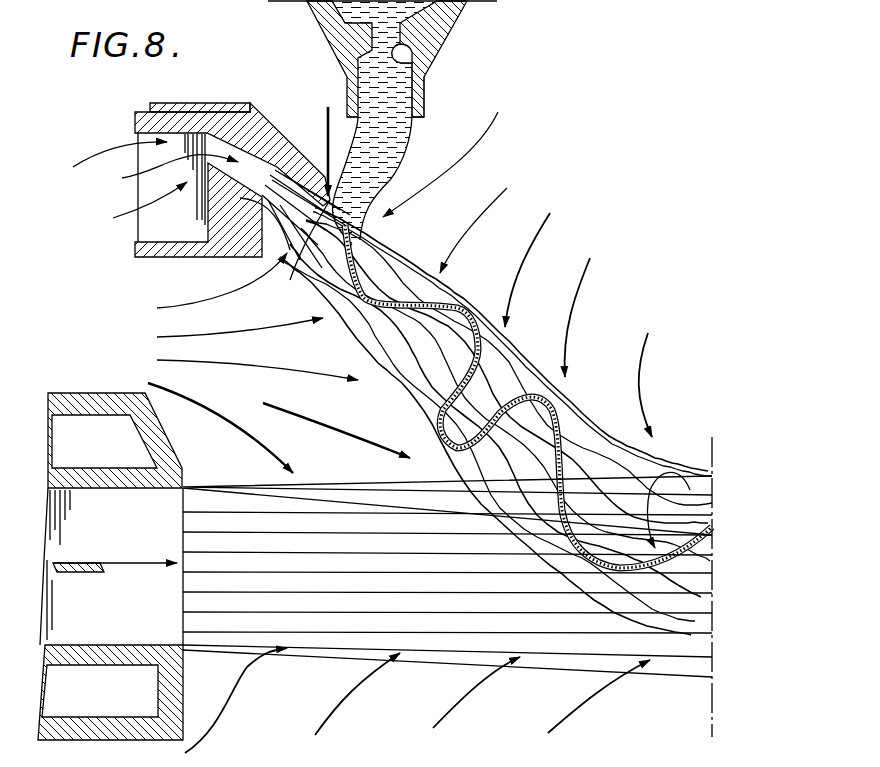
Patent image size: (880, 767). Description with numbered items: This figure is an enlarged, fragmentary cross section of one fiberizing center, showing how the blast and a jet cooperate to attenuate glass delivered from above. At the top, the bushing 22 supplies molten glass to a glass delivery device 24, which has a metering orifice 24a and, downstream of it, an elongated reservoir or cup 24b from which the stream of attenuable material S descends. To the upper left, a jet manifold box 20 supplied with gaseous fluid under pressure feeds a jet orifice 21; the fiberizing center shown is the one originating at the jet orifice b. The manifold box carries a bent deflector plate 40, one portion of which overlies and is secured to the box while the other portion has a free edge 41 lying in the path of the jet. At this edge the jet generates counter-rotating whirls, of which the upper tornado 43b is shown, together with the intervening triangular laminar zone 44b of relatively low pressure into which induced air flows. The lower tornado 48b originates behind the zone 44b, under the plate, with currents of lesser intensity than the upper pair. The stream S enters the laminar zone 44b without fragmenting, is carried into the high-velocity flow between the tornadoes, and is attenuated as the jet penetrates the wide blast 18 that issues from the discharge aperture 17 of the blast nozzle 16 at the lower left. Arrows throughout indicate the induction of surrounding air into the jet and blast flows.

The blast nozzle 16 is at (75, 393).
The discharge aperture 17 is at (125, 490).
The blast 18 is at (332, 580).
The jet manifold box 20 is at (137, 112).
The jet orifice 21 is at (169, 173).
The jet orifice b is at (262, 185).
The bushing 22 is at (468, 22).
The glass delivery device 24 is at (416, 117).
The metering orifice 24a is at (424, 67).
The reservoir or cup 24b is at (424, 93).
The deflector plate 40 is at (318, 210).
The free edge 41 is at (307, 270).
The tornado 43b is at (367, 235).
The triangular laminar zone 44b is at (331, 290).
The lower tornado 48b is at (376, 325).
The stream of attenuable material S is at (360, 260).